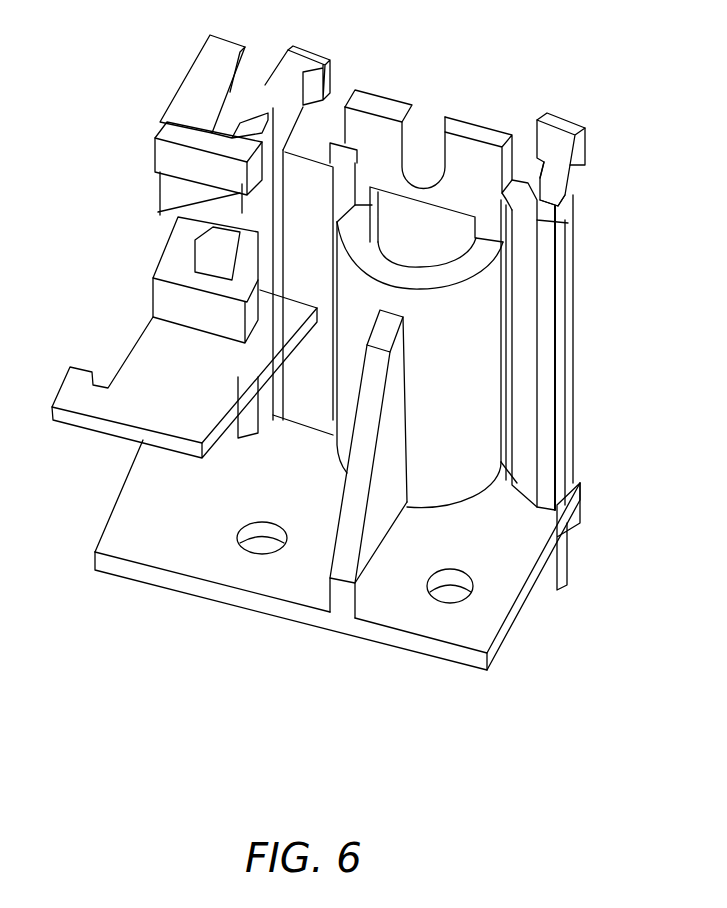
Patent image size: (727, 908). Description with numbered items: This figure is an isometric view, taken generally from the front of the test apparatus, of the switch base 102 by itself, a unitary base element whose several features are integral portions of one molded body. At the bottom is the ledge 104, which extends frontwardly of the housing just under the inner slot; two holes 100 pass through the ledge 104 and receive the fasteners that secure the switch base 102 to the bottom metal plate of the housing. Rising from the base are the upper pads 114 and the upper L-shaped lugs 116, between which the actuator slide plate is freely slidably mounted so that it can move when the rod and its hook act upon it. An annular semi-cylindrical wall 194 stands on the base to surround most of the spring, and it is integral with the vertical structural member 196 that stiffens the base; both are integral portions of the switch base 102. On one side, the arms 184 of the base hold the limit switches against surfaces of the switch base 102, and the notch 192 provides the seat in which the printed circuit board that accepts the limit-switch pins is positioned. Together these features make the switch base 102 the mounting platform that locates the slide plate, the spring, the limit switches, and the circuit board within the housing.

The holes 100 is at (455, 600).
The switch base 102 is at (341, 383).
The ledge 104 is at (508, 553).
The upper pads 114 is at (360, 102).
The upper L-shaped lugs 116 is at (308, 62).
The arms 184 is at (185, 113).
The notch 192 is at (107, 382).
The annular semi-cylindrical wall 194 is at (487, 338).
The vertical structural member 196 is at (378, 535).